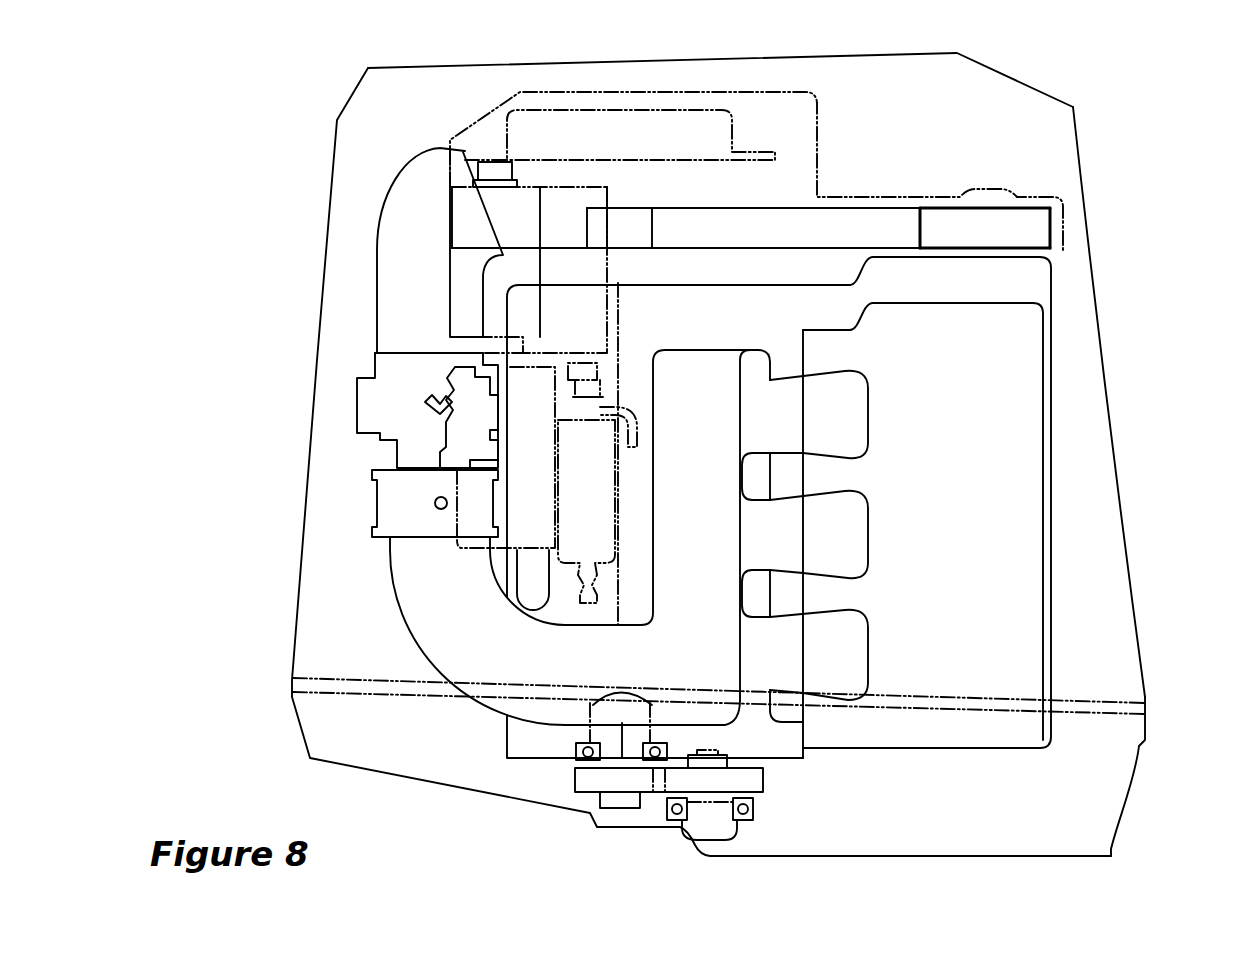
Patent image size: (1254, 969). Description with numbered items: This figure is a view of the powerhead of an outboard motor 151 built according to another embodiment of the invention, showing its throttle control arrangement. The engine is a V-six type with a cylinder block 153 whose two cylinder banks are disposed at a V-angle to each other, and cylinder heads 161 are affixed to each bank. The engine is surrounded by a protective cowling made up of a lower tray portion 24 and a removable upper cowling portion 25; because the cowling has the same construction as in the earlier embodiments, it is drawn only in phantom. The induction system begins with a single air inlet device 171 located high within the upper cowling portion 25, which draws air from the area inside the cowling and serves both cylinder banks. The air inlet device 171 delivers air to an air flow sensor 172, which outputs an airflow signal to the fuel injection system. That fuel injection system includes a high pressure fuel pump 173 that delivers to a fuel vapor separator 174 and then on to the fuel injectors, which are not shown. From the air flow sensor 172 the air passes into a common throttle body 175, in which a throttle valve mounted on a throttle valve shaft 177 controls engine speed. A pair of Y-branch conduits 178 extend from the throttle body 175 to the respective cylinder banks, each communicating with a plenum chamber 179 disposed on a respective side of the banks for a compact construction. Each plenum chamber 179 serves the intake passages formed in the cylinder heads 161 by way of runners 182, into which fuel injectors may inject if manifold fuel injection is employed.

The lower tray portion 24 is at (1146, 738).
The removable upper cowling portion 25 is at (1108, 335).
The outboard motor 151 is at (1152, 458).
The cylinder block 153 is at (777, 307).
The cylinder heads 161 is at (1022, 460).
The air inlet device 171 is at (422, 160).
The air flow sensor 172 is at (368, 403).
The high pressure fuel pump 173 is at (573, 550).
The fuel vapor separator 174 is at (527, 360).
The common throttle body 175 is at (370, 505).
The throttle valve shaft 177 is at (440, 513).
The Y-branch conduits 178 is at (463, 663).
The plenum chamber 179 is at (708, 475).
The runners 182 is at (857, 415).